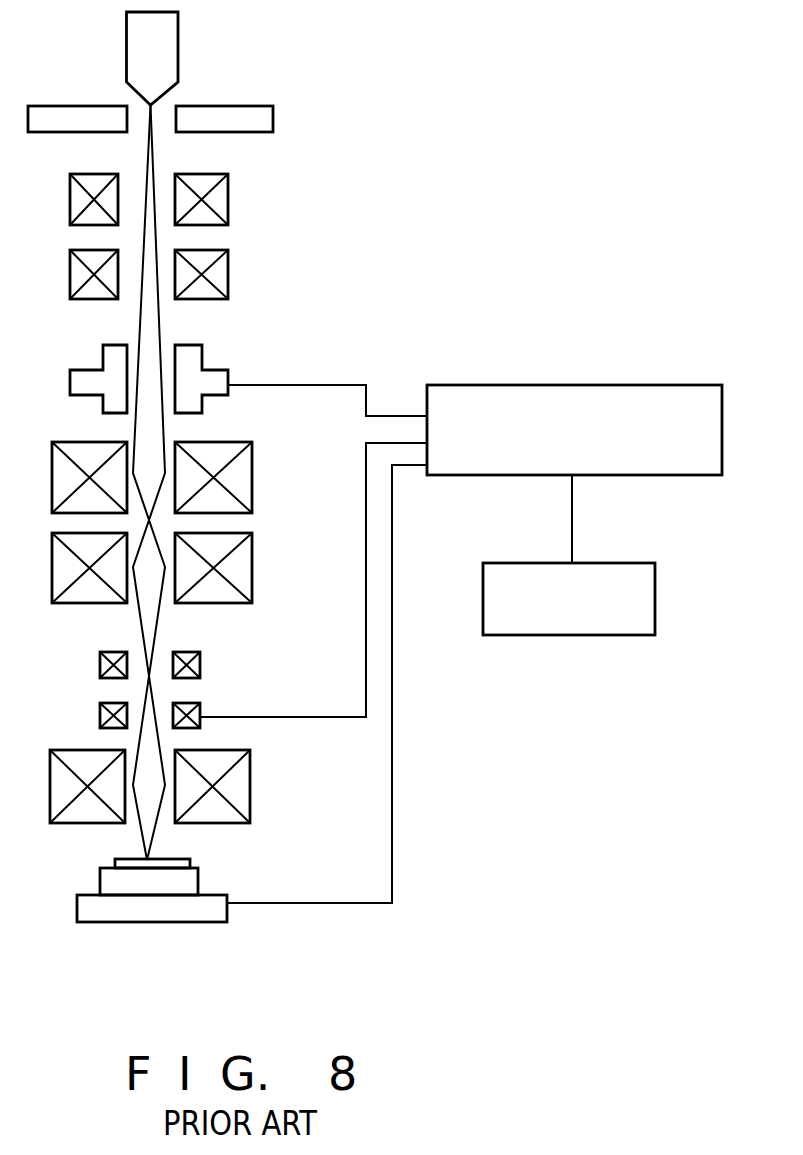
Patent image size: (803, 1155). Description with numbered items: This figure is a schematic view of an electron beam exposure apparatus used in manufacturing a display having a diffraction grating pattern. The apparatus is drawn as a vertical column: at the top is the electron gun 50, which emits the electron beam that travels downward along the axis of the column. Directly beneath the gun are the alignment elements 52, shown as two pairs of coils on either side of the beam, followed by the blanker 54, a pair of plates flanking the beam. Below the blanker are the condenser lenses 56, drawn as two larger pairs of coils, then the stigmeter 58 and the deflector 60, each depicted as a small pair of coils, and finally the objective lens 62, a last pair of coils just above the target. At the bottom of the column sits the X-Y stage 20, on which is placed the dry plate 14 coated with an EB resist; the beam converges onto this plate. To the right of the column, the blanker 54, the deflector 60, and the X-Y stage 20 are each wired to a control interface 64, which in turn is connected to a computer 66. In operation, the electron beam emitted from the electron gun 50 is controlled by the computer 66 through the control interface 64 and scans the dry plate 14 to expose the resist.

The electron gun 50 is at (178, 42).
The alignment elements 52 is at (228, 214).
The blanker 54 is at (222, 370).
The condenser lenses 56 is at (252, 500).
The stigmeter 58 is at (200, 662).
The deflector 60 is at (200, 710).
The objective lens 62 is at (250, 790).
The dry plate 14 is at (190, 866).
The X-Y stage 20 is at (197, 915).
The control interface 64 is at (548, 385).
The computer 66 is at (620, 563).